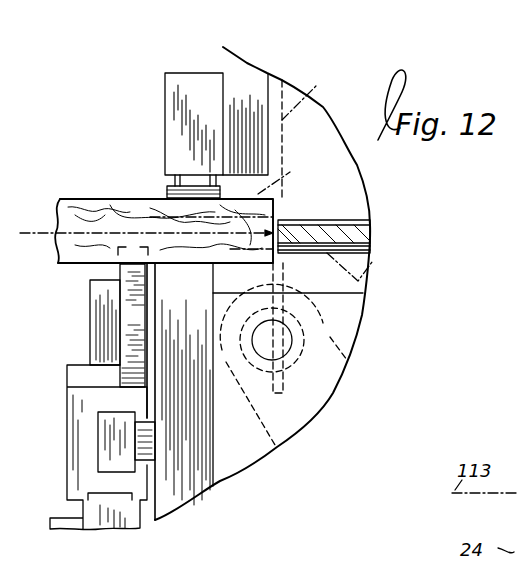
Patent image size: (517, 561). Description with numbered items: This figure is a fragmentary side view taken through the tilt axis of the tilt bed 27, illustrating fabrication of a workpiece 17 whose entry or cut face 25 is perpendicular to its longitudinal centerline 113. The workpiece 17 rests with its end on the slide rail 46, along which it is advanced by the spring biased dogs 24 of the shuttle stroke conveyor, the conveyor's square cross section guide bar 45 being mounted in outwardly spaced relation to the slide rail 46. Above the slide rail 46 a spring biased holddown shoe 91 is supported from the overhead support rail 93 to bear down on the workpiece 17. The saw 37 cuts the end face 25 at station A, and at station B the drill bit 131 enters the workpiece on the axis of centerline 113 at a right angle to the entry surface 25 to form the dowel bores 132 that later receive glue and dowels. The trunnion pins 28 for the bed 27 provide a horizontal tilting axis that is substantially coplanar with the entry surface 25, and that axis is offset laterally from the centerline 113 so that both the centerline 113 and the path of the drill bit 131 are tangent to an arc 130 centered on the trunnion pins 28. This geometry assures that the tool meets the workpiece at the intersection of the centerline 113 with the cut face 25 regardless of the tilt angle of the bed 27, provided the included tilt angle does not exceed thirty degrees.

The workpiece 17 is at (110, 207).
The spring biased dogs 24 is at (140, 289).
The end face 25 is at (275, 206).
The bed 27 is at (343, 283).
The trunnion pins 28 is at (292, 344).
The saw 37 is at (305, 90).
The guide bar 45 is at (107, 447).
The slide rail 46 is at (170, 320).
The holddown shoes 91 is at (167, 194).
The overhead support rail 93 is at (186, 80).
The centerline 113 is at (28, 233).
The arc 130 is at (372, 262).
The drill bit 131 is at (372, 219).
The dowel bores 132 is at (292, 178).